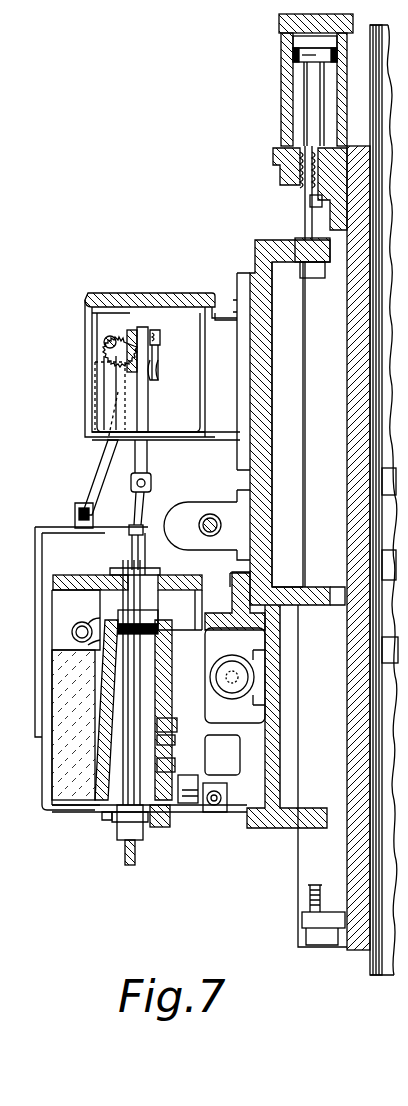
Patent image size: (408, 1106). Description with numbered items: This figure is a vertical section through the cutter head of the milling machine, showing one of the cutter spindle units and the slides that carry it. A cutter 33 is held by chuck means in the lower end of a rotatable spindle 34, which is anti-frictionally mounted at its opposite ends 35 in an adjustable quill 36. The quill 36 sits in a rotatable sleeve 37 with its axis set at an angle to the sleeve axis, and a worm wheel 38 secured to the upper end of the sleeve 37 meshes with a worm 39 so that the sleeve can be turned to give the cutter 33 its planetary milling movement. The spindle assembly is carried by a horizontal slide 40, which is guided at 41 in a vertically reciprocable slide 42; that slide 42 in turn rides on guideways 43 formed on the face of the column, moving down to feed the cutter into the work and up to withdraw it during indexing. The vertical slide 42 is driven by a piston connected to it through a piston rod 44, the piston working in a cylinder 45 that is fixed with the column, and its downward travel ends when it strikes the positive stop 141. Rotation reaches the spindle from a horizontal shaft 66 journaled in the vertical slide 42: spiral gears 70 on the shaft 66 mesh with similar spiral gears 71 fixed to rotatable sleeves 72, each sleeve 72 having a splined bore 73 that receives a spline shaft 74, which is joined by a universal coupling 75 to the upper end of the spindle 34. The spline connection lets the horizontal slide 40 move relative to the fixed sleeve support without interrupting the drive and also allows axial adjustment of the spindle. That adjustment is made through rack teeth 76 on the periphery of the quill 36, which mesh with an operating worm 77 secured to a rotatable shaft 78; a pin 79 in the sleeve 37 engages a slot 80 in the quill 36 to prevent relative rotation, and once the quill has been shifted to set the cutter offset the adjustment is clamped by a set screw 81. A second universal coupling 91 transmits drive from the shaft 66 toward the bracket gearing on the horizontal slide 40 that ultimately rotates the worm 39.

The cutter 33 is at (128, 852).
The rotatable spindle 34 is at (155, 628).
The spindle ends 35 is at (125, 616).
The adjustable quill 36 is at (110, 817).
The rotatable sleeve 37 is at (95, 811).
The worm wheel 38 is at (195, 628).
The worm 39 is at (72, 632).
The horizontal slide 40 is at (52, 801).
The guide 41 is at (280, 747).
The vertically reciprocable slide 42 is at (255, 247).
The guideways 43 is at (297, 56).
The piston rod 44 is at (305, 195).
The cylinder 45 is at (281, 50).
The horizontal shaft 66 is at (92, 350).
The spiral gears 70 is at (112, 330).
The spiral gears 71 is at (160, 355).
The rotatable sleeves 72 is at (158, 372).
The splined bore 73 is at (160, 340).
The spline shaft 74 is at (142, 327).
The universal coupling 75 is at (143, 510).
The rack teeth 76 is at (157, 818).
The operating worm 77 is at (159, 765).
The rotatable shaft 78 is at (182, 803).
The pin 79 is at (159, 741).
The slot 80 is at (159, 725).
The set screw 81 is at (214, 806).
The universal coupling 91 is at (97, 462).
The positive stop 141 is at (302, 920).